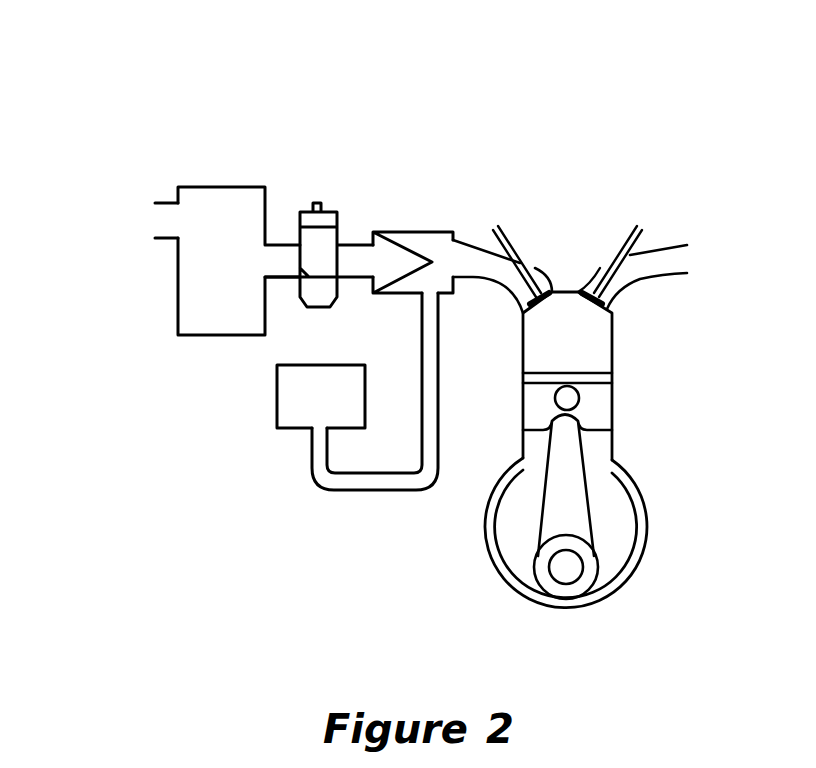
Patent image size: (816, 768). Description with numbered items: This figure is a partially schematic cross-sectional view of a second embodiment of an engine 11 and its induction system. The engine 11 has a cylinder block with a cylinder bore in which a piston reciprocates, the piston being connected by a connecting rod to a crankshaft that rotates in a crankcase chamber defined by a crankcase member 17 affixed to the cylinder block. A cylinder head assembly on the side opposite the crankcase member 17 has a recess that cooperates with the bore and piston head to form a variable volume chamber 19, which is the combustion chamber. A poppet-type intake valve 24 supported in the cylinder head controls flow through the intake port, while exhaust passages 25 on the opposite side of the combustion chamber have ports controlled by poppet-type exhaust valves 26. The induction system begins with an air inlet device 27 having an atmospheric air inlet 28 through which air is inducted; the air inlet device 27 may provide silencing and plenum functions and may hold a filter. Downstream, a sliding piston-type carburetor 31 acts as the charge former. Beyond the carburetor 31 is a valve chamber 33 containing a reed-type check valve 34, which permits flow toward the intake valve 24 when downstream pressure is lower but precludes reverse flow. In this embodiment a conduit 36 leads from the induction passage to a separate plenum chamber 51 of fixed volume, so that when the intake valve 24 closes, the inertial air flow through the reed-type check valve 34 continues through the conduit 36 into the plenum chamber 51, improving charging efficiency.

The engine 11 is at (655, 384).
The crankcase member 17 is at (650, 527).
The variable volume chamber 19 is at (567, 310).
The intake valve 24 is at (540, 283).
The exhaust passage 25 is at (660, 265).
The exhaust valve 26 is at (592, 275).
The air inlet device 27 is at (208, 208).
The atmospheric air inlet 28 is at (162, 225).
The carburetor 31 is at (297, 233).
The valve chamber 33 is at (433, 252).
The reed-type check valve 34 is at (403, 243).
The conduit 36 is at (370, 490).
The plenum chamber 51 is at (277, 403).